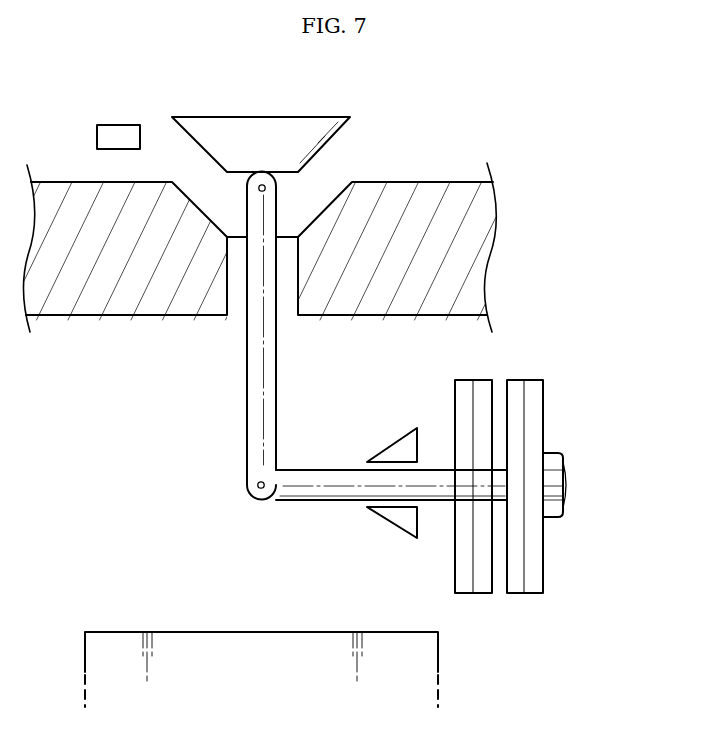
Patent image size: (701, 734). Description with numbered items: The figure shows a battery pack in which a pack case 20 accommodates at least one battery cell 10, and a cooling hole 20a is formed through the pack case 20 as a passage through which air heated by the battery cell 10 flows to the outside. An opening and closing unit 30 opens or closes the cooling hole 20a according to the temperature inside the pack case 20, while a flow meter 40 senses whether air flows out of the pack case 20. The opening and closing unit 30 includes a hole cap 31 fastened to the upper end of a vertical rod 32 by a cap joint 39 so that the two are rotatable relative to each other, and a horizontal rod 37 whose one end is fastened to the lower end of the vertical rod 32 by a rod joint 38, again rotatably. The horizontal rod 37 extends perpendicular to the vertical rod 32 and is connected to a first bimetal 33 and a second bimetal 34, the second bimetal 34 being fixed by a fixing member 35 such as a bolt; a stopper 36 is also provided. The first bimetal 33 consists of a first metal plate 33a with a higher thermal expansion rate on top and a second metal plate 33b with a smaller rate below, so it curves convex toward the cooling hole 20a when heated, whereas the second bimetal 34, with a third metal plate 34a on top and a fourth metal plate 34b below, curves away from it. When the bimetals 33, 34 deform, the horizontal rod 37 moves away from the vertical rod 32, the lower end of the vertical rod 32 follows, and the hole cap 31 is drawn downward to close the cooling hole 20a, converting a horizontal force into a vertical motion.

The battery cell 10 is at (189, 632).
The pack case 20 is at (432, 182).
The cooling hole 20a is at (293, 273).
The opening and closing unit 30 is at (547, 363).
The hole cap 31 is at (297, 117).
The vertical rod 32 is at (247, 363).
The first bimetal 33 is at (421, 487).
The first metal plate 33a is at (455, 559).
The second metal plate 33b is at (483, 589).
The second bimetal 34 is at (576, 487).
The third metal plate 34a is at (545, 558).
The fourth metal plate 34b is at (517, 590).
The fixing member 35 is at (565, 462).
The stopper 36 is at (393, 442).
The horizontal rod 37 is at (322, 470).
The rod joint 38 is at (257, 485).
The cap joint 39 is at (258, 188).
The flow meter 40 is at (114, 125).